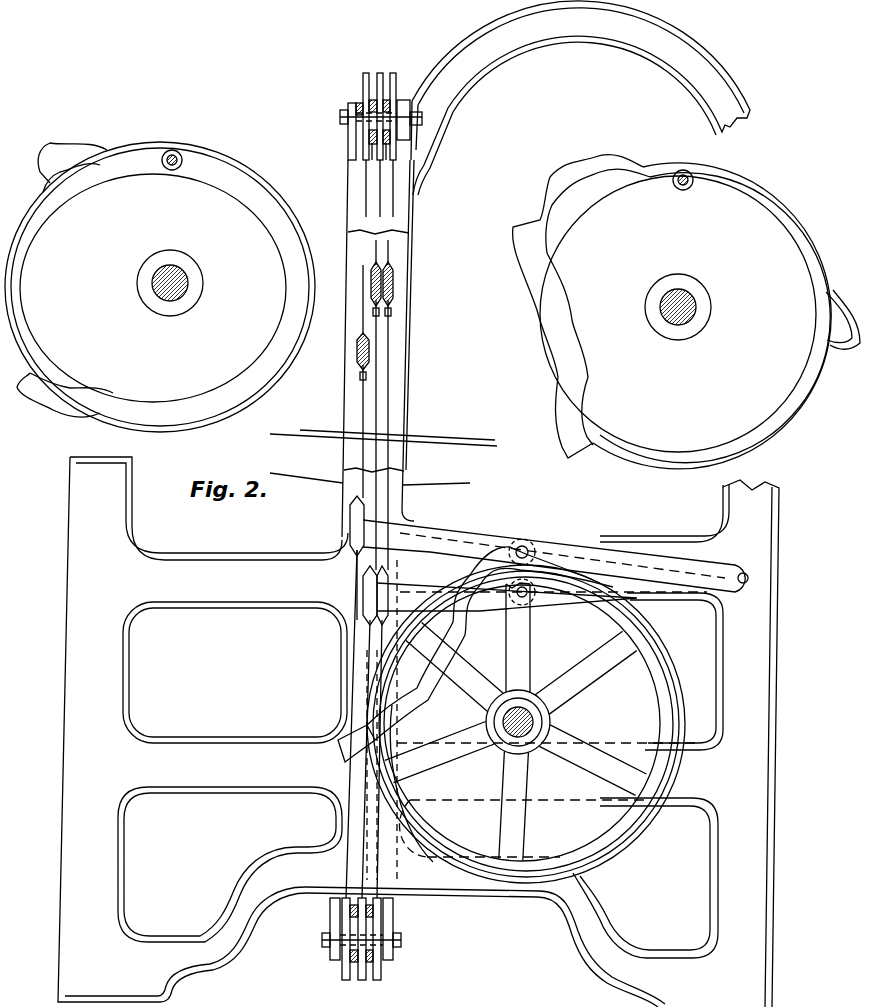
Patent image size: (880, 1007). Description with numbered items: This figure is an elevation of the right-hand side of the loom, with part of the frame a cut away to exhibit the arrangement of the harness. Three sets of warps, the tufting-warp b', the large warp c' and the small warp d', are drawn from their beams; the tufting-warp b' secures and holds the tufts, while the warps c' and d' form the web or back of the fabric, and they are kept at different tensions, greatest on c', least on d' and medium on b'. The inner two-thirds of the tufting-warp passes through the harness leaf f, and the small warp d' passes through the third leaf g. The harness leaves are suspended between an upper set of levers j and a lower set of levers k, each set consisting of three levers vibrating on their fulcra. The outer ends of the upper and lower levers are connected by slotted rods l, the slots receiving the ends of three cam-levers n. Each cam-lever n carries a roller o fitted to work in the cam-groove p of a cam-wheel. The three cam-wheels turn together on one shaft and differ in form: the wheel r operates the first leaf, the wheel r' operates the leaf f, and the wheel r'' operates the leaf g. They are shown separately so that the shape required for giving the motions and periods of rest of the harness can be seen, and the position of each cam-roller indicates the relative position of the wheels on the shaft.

The frame a is at (418, 504).
The cam-groove p is at (432, 375).
The roller o is at (429, 352).
The cam-wheel for leaf f r' is at (153, 288).
The cam-wheel for leaf e r is at (678, 314).
The cam-wheel for leaf g r'' is at (517, 715).
The upper levers j is at (381, 116).
The lower levers k is at (361, 950).
The rods l is at (371, 529).
The harness leaf f is at (381, 432).
The harness leaf g is at (358, 442).
The cam-levers n is at (555, 565).
The tufting-warp b' is at (397, 437).
The large warp c' is at (384, 441).
The small warp d' is at (370, 473).